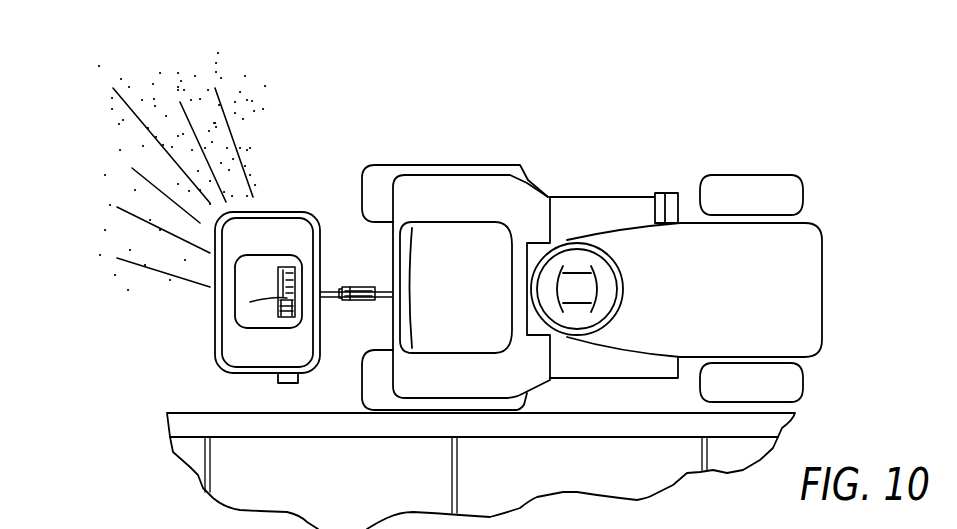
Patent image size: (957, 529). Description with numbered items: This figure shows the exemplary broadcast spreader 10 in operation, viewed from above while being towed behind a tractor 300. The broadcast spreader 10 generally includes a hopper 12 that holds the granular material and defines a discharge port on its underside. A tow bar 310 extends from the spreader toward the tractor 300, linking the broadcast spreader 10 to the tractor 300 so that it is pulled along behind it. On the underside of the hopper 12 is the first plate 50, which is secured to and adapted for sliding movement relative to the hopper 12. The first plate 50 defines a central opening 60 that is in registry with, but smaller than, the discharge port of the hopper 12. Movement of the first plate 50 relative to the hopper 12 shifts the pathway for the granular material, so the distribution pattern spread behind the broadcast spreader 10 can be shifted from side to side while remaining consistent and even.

The broadcast spreader 10 is at (235, 283).
The hopper 12 is at (215, 343).
The first plate 50 is at (292, 268).
The central opening 60 is at (250, 302).
The tractor 300 is at (420, 180).
The tow bar 310 is at (385, 288).